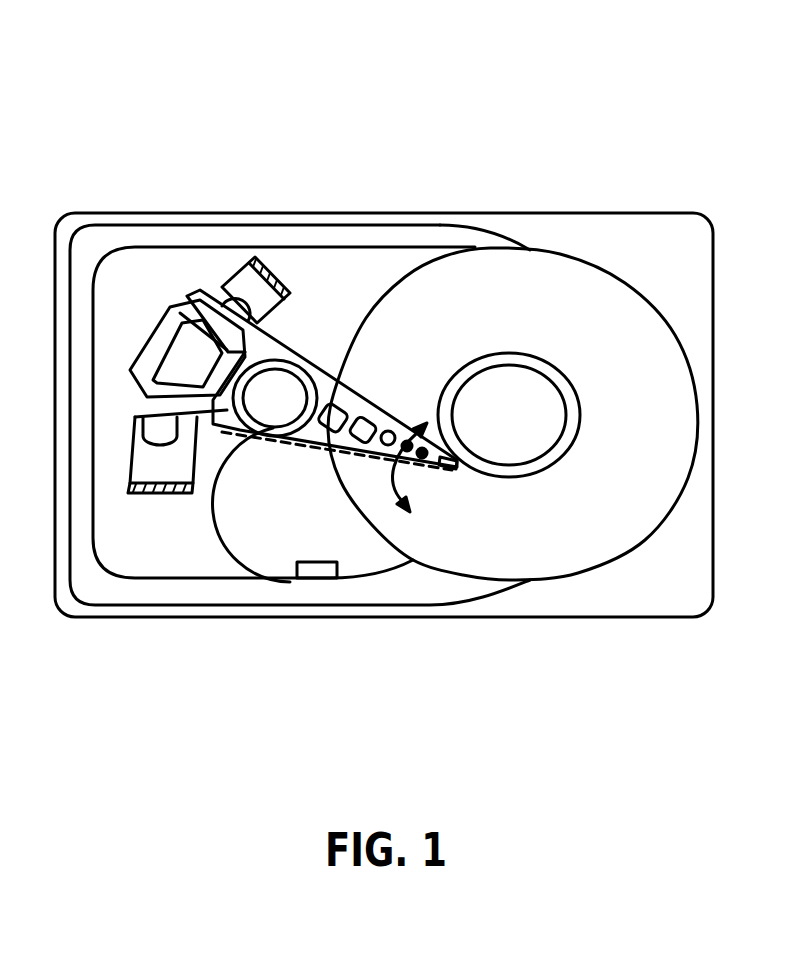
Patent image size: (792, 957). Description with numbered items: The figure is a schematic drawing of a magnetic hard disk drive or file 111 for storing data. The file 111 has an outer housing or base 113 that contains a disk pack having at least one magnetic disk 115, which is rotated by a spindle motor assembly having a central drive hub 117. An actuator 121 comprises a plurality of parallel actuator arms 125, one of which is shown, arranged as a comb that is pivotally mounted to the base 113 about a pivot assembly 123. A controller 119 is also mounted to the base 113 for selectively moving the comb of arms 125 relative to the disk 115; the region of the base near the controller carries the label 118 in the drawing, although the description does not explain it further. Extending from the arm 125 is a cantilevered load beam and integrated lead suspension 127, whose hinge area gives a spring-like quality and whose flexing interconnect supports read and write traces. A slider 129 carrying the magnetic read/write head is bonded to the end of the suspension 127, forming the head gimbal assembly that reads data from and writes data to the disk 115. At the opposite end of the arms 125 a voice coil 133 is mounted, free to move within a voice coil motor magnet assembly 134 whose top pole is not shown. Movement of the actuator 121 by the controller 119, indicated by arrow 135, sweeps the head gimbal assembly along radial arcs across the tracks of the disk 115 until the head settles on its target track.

The magnetic hard disk drive or file 111 is at (669, 128).
The outer housing or base 113 is at (562, 212).
The magnetic disk 115 is at (583, 278).
The central drive hub 117 is at (537, 353).
The base cavity 118 is at (242, 567).
The controller 119 is at (318, 563).
The actuator 121 is at (214, 501).
The pivot assembly 123 is at (257, 433).
The actuator arm 125 is at (330, 377).
The integrated lead suspension 127 is at (373, 407).
The slider 129 is at (443, 463).
The voice coil 133 is at (158, 318).
The voice coil motor magnet assembly 134 is at (237, 283).
The arrow indicating actuator movement 135 is at (385, 461).